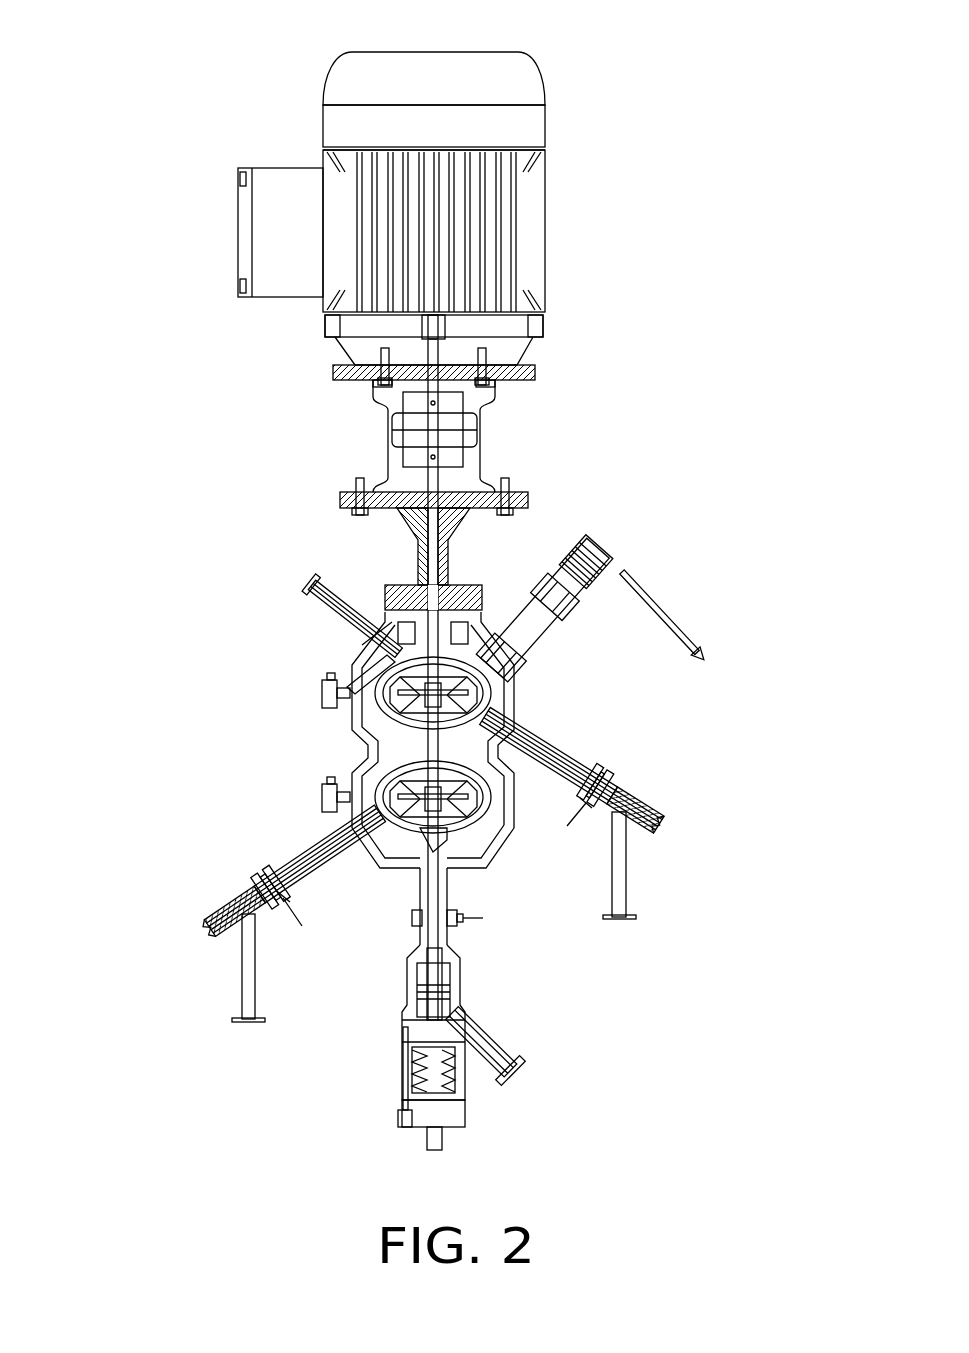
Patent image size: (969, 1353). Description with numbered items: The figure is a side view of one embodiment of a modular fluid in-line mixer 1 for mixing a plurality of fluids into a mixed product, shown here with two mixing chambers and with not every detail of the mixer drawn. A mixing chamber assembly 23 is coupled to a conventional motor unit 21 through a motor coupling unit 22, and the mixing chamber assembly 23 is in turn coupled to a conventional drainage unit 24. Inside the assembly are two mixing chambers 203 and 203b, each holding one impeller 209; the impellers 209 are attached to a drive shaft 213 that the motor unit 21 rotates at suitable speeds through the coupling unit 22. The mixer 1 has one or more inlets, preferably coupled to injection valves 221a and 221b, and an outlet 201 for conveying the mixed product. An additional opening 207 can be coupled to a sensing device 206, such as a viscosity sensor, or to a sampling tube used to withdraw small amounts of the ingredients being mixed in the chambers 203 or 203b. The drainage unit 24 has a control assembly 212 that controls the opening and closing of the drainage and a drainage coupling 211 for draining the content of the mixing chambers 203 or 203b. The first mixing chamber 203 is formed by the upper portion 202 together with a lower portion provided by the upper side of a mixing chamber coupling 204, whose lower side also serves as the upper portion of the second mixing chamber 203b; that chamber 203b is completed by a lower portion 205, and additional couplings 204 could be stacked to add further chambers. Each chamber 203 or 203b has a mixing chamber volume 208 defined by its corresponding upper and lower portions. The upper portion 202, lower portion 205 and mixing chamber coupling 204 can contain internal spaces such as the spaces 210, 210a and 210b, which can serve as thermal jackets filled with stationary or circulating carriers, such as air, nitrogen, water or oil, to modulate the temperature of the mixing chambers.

The modular fluid in-line mixer 1 is at (670, 200).
The motor unit 21 is at (190, 44).
The motor coupling unit 22 is at (193, 415).
The mixing chamber assembly 23 is at (193, 703).
The drainage unit 24 is at (210, 1094).
The outlet 201 is at (338, 590).
The upper portion 202 is at (372, 648).
The mixing chamber 203 is at (382, 700).
The second mixing chamber 203b is at (378, 812).
The mixing chamber coupling 204 is at (363, 738).
The lower portion 205 is at (360, 820).
The sensing device 206 is at (620, 568).
The additional opening 207 is at (514, 634).
The mixing chamber volume 208 is at (500, 684).
The impeller 209 is at (490, 700).
The internal space 210 is at (578, 746).
The internal space 210a is at (365, 678).
The internal space 210b is at (387, 848).
The drainage coupling 211 is at (522, 1076).
The control assembly 212 is at (455, 1098).
The drive shaft 213 is at (434, 648).
The injection valve 221a is at (650, 800).
The injection valve 221b is at (232, 897).